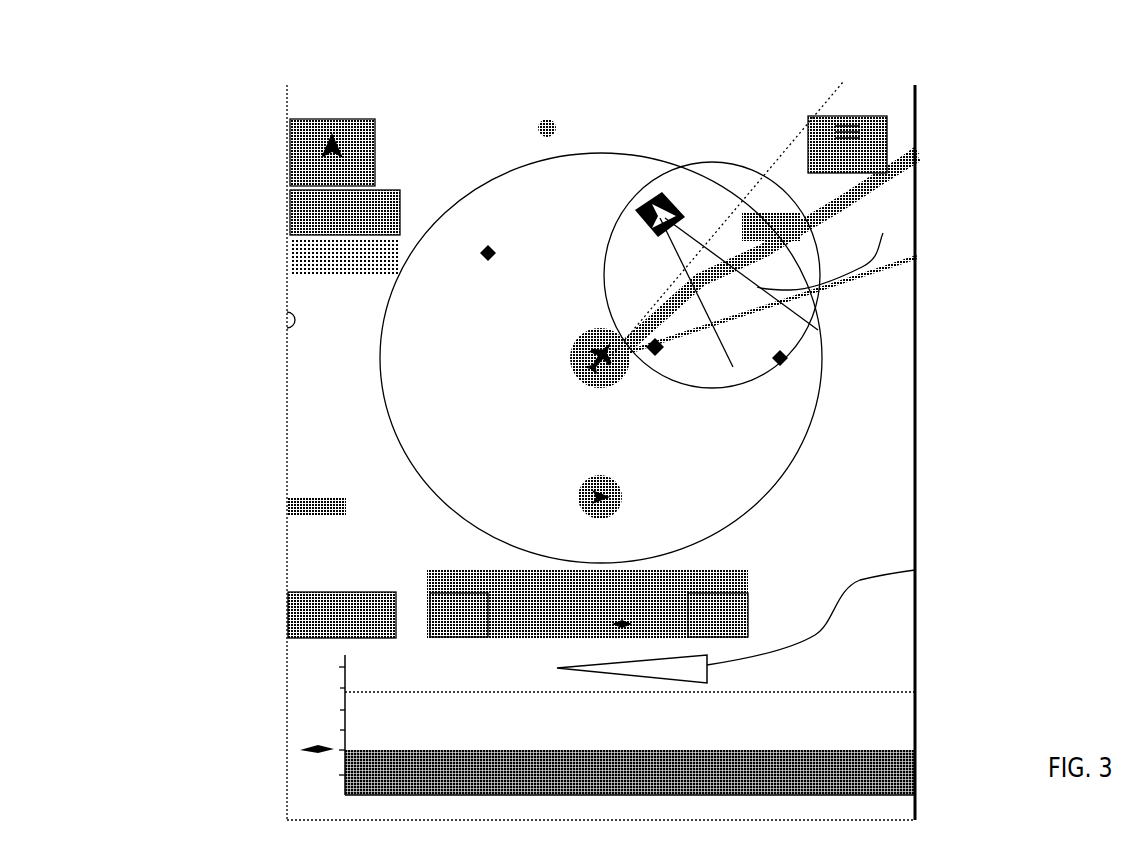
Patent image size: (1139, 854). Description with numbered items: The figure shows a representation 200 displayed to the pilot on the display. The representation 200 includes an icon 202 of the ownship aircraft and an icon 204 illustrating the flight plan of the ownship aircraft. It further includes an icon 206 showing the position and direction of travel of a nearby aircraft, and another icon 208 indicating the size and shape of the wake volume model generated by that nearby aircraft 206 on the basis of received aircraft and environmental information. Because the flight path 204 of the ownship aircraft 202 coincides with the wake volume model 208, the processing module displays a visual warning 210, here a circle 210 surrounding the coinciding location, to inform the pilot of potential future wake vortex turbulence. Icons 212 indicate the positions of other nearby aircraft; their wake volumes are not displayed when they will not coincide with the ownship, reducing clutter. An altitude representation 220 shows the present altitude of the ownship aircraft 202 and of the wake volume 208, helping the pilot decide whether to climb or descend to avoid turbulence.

The representation 200 is at (208, 590).
The icon of the ownship aircraft 202 is at (583, 355).
The icon illustrating the flight plan 204 is at (865, 192).
The icon of nearby aircraft 206 is at (657, 197).
The wake volume model icon 208 is at (883, 233).
The visual warning 210 is at (747, 166).
The icons of other nearby aircraft 212 is at (612, 498).
The altitude representation 220 is at (887, 703).